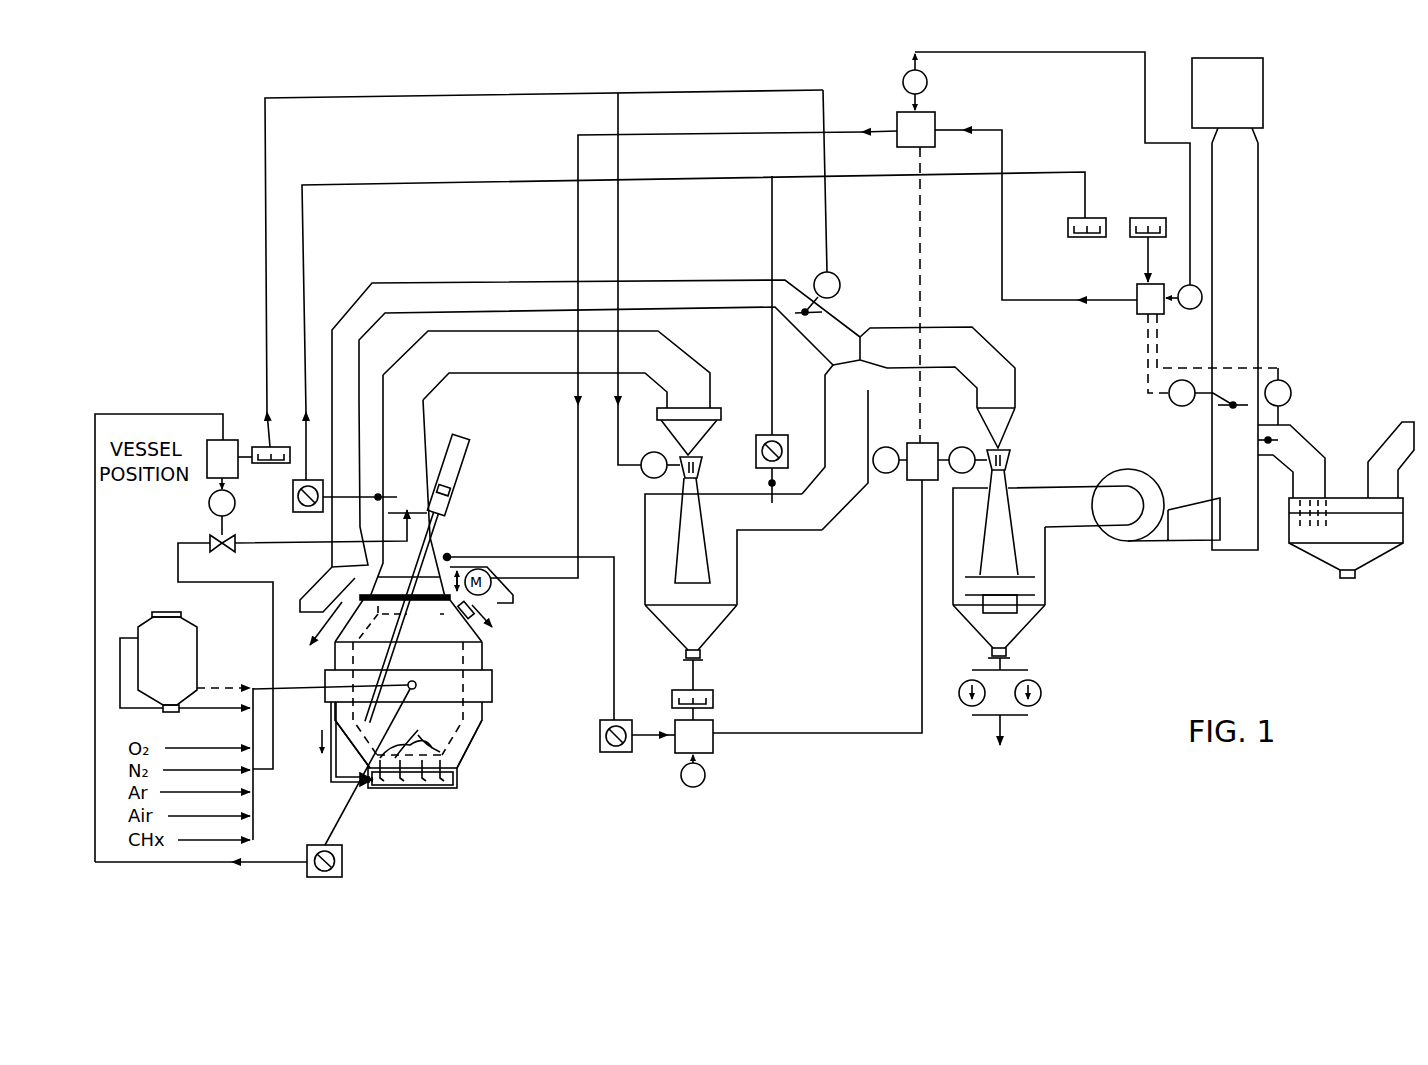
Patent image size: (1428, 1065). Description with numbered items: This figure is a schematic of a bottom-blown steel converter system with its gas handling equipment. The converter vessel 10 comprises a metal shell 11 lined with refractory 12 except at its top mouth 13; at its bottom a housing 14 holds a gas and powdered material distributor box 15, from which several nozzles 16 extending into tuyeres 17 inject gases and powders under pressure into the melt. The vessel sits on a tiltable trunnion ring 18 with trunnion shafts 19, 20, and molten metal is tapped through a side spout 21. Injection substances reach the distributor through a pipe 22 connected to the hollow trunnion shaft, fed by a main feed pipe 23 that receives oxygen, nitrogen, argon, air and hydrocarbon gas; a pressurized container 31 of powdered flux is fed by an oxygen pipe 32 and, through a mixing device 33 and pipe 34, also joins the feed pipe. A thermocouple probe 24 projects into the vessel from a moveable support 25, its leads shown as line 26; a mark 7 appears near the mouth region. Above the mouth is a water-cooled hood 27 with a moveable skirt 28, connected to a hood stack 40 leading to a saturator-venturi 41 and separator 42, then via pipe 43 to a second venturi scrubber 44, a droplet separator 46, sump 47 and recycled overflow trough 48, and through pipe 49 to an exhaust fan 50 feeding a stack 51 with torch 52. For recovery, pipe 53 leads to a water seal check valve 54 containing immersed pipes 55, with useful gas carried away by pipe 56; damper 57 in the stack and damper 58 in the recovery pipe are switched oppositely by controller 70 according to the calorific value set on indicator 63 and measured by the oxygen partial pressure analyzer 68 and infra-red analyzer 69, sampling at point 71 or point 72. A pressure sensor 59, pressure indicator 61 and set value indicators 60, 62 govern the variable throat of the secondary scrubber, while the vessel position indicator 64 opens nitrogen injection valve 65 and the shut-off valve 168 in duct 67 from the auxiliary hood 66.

The vessel mouth 7 is at (426, 611).
The bottom-blown converter vessel 10 is at (500, 729).
The metal shell 11 is at (493, 748).
The refractory 12 is at (460, 766).
The top mouth 13 is at (408, 621).
The housing 14 is at (440, 788).
The gas and powdered material distributor box 15 is at (396, 788).
The nozzles 16 is at (378, 790).
The tuyeres 17 is at (410, 740).
The tiltable trunnion ring 18 is at (492, 690).
The trunnion shaft 19 is at (383, 756).
The trunnion shaft 20 is at (458, 689).
The tapping side spout 21 is at (478, 619).
The pipe 22 is at (325, 723).
The main feed pipe 23 is at (311, 689).
The thermocouple probe 24 is at (440, 528).
The thermocouple support 25 is at (455, 468).
The lead conductors 26 is at (467, 431).
The water-cooled hood 27 is at (416, 446).
The moveable skirt 28 is at (363, 585).
The pressurized container 31 is at (190, 661).
The oxygen pipe 32 is at (126, 710).
The mixing device 33 is at (177, 712).
The pipe 34 is at (218, 712).
The water-cooled hood stack 40 is at (553, 374).
The saturator-venturi 41 is at (699, 438).
The separator 42 is at (740, 591).
The pipe 43 is at (1011, 390).
The second venturi scrubber 44 is at (1013, 429).
The droplet separator 46 is at (1048, 592).
The sump 47 is at (1023, 628).
The overflow trough 48 is at (722, 412).
The pipe 49 is at (1076, 536).
The exhaust fan 50 is at (1150, 532).
The stack 51 is at (1244, 240).
The torch 52 is at (1252, 93).
The pipe 53 is at (1300, 447).
The water seal check valve 54 is at (1374, 536).
The pipes 55 is at (1301, 529).
The pipe 56 is at (1408, 422).
The damper 57 is at (1232, 409).
The damper 58 is at (1267, 450).
The pressure sensor 59 is at (450, 555).
The set value indicator 60 is at (889, 447).
The pressure indicator 61 is at (672, 701).
The set value indicator 62 is at (681, 777).
The set value indicator 63 is at (903, 81).
The vessel position indicator 64 is at (270, 464).
The nitrogen injection valve 65 is at (233, 540).
The auxiliary hood 66 is at (311, 591).
The duct 67 is at (713, 282).
The oxygen partial pressure analyzer 68 is at (1068, 229).
The infra-red analyzer 69 is at (1156, 238).
The controller 70 is at (1160, 314).
The sampling point 71 is at (360, 504).
The sampling point 72 is at (769, 483).
The shut off valve 168 is at (812, 323).